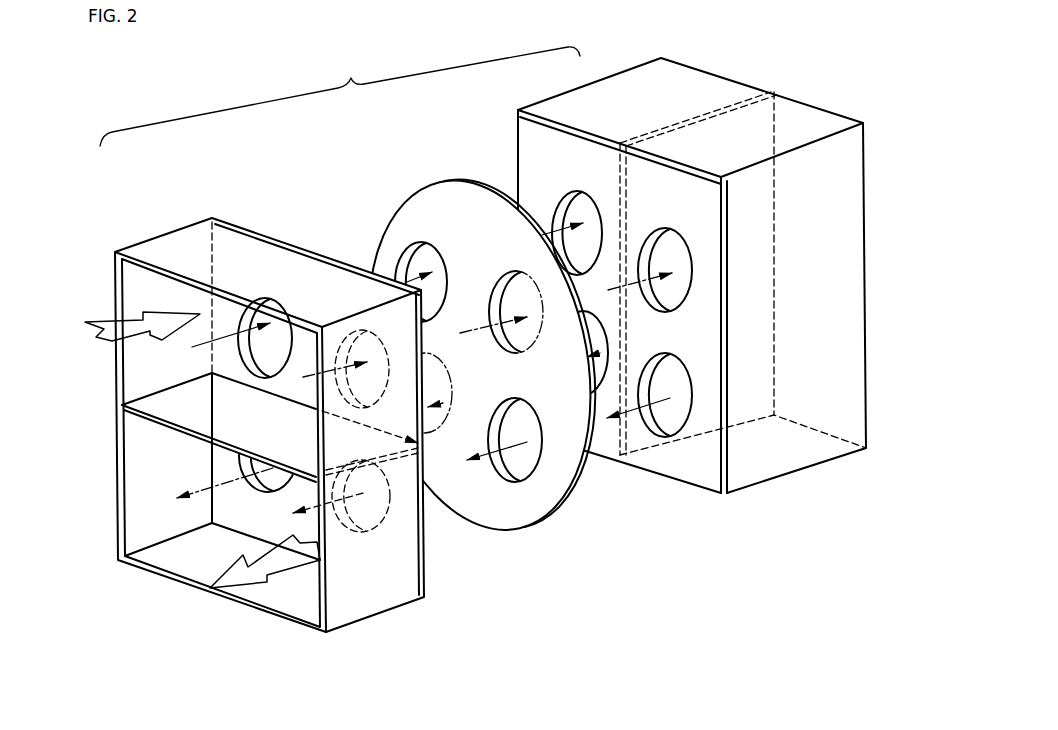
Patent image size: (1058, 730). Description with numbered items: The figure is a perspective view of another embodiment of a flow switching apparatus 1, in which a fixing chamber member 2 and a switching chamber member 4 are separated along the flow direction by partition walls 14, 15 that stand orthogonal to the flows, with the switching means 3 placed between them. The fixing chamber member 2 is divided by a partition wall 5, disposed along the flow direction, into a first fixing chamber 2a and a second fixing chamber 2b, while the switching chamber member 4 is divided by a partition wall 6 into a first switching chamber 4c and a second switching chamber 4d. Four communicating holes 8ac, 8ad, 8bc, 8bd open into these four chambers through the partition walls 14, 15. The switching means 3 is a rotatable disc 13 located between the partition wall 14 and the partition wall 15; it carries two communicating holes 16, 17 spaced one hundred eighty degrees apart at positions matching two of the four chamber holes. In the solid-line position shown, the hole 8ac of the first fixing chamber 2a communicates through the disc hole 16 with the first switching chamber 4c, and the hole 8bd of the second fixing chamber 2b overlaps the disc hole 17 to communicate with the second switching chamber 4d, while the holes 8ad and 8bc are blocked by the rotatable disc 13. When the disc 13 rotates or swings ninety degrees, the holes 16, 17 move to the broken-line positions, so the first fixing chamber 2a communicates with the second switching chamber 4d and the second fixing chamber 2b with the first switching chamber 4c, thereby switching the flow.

The ventilation apparatus 1 is at (369, 72).
The fixing chamber member 2 is at (166, 198).
The first fixing chamber 2a is at (140, 368).
The second fixing chamber 2b is at (135, 478).
The switching means 3 is at (363, 152).
The switching chamber member 4 is at (587, 107).
The first switching chamber 4c is at (638, 103).
The second switching chamber 4d is at (802, 180).
The partition wall 5 is at (173, 408).
The partition wall 6 is at (743, 128).
The communicating hole 8ac is at (567, 203).
The communicating hole 8ad is at (673, 290).
The communicating hole 8bc is at (597, 385).
The communicating hole 8bd is at (668, 417).
The rotatable disc 13 is at (402, 215).
The partition wall 14 is at (272, 238).
The partition wall 15 is at (557, 122).
The communicating hole 16 is at (425, 258).
The communicating hole 17 is at (523, 470).